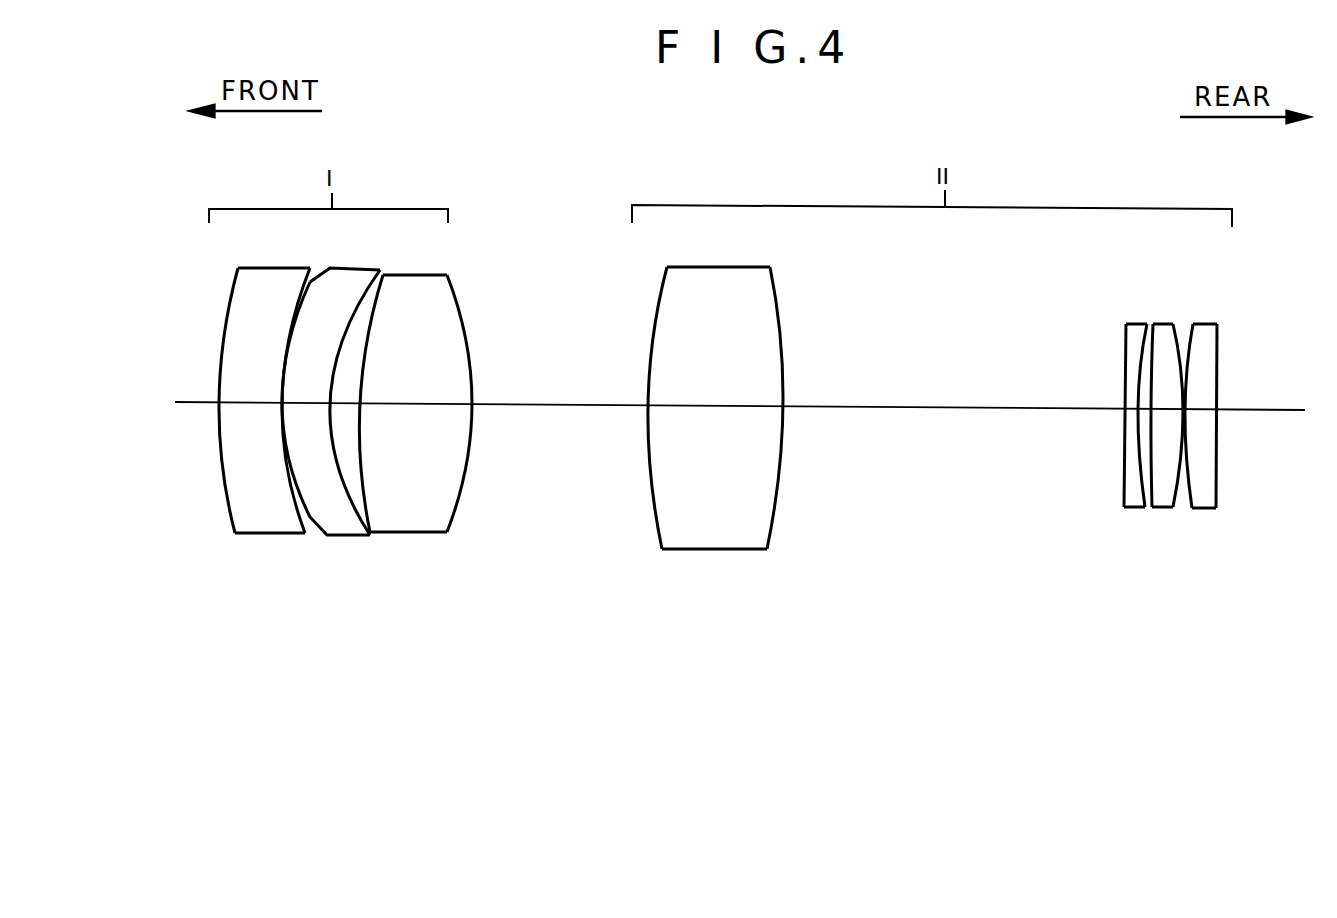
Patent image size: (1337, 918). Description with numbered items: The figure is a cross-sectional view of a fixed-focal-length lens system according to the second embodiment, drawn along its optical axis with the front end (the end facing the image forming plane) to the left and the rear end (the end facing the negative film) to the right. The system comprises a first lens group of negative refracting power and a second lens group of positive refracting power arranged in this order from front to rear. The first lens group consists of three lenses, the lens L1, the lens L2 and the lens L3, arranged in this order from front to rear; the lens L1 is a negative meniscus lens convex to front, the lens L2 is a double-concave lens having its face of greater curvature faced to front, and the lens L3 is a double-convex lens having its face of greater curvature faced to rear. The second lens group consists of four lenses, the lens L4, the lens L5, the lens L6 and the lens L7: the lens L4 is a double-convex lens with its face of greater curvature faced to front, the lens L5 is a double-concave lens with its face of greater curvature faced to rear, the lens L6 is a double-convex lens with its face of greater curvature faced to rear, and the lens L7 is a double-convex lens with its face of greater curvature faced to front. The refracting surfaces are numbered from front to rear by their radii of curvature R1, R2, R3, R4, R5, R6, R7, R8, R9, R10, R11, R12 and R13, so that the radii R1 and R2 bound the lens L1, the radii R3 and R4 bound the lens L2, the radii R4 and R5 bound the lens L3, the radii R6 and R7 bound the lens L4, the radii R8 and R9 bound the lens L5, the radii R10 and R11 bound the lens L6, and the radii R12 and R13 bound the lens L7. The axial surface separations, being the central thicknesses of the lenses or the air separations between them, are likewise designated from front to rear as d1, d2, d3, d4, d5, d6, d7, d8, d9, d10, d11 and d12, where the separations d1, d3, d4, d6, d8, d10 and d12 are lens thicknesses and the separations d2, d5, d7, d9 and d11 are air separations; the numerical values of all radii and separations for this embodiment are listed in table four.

The lens L1 is at (243, 408).
The lens L2 is at (278, 408).
The lens L3 is at (440, 409).
The lens L4 is at (720, 389).
The lens L5 is at (1083, 396).
The lens L6 is at (1204, 399).
The lens L7 is at (1246, 375).
The radius of curvature R1 is at (228, 500).
The radius of curvature R2 is at (291, 481).
The radius of curvature R3 is at (314, 498).
The radius of curvature R4 is at (368, 484).
The radius of curvature R5 is at (455, 523).
The radius of curvature R6 is at (658, 532).
The radius of curvature R7 is at (773, 523).
The radius of curvature R8 is at (1125, 456).
The radius of curvature R9 is at (1138, 472).
The radius of curvature R10 is at (1152, 484).
The radius of curvature R11 is at (1178, 490).
The radius of curvature R12 is at (1192, 480).
The radius of curvature R13 is at (1217, 455).
The axial surface separation d1 is at (240, 403).
The axial surface separation d2 is at (300, 403).
The axial surface separation d3 is at (345, 403).
The axial surface separation d4 is at (448, 404).
The axial surface separation d5 is at (549, 404).
The axial surface separation d6 is at (738, 405).
The axial surface separation d7 is at (913, 409).
The axial surface separation d8 is at (1131, 410).
The axial surface separation d9 is at (1146, 408).
The axial surface separation d10 is at (1165, 408).
The axial surface separation d11 is at (1184, 409).
The axial surface separation d12 is at (1205, 410).